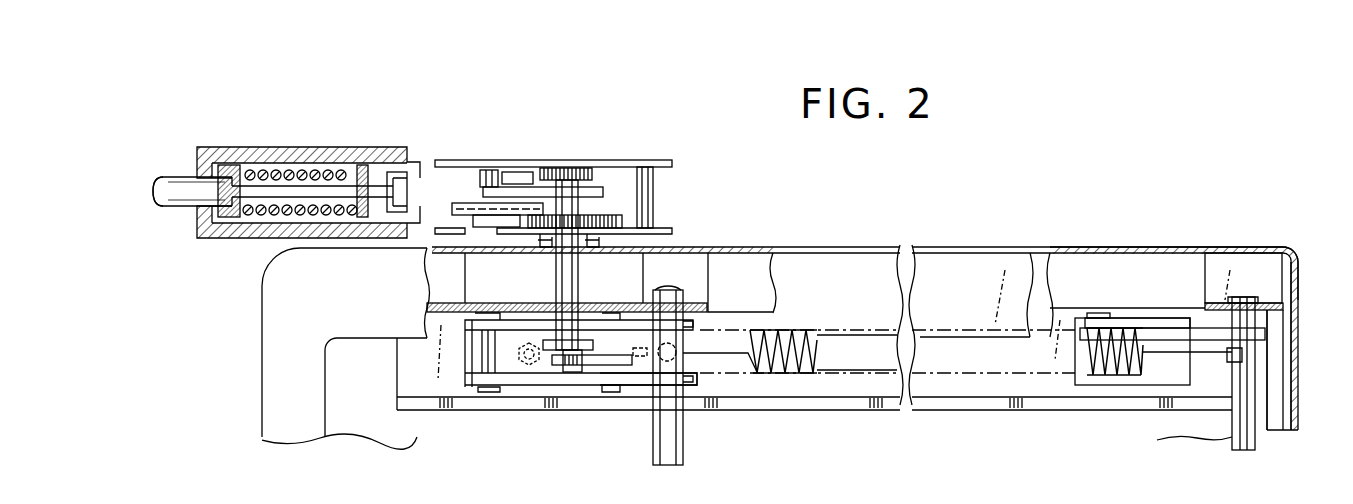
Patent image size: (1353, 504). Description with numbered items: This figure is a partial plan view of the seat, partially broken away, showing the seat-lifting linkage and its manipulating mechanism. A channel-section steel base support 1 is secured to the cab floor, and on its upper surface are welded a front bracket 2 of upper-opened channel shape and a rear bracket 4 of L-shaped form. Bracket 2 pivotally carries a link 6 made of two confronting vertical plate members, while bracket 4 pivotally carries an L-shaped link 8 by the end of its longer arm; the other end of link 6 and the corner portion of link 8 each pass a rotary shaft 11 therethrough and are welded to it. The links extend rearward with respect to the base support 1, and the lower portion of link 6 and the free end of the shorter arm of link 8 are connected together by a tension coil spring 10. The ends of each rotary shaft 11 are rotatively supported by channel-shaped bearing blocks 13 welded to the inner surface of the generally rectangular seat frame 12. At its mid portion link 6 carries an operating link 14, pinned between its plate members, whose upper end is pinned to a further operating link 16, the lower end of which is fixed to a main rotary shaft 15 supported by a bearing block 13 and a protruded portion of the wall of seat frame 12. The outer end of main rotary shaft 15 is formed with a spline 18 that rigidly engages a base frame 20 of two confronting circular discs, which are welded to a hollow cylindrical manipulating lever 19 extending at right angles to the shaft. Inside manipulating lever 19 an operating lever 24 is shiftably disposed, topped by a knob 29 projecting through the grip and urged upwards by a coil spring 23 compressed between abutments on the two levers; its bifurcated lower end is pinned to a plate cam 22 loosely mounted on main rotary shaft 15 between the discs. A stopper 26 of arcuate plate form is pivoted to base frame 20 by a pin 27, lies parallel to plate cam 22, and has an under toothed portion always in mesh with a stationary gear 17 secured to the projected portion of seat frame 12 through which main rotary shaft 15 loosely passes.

The base support 1 is at (861, 410).
The bracket 2 is at (510, 388).
The bracket 4 is at (1122, 320).
The link 6 is at (637, 377).
The link 8 is at (1155, 330).
The tension coil spring 10 is at (788, 375).
The rotary shaft 11 is at (683, 430).
The seat frame 12 is at (1185, 247).
The bearing block 13 is at (606, 302).
The operating link 14 is at (589, 367).
The main rotary shaft 15 is at (558, 274).
The operating link 16 is at (546, 352).
The stationary gear 17 is at (613, 215).
The spline 18 is at (582, 166).
The manipulating lever 19 is at (205, 240).
The base frame 20 is at (628, 160).
The plate cam 22 is at (556, 170).
The coil spring 23 is at (252, 217).
The operating lever 24 is at (300, 188).
The stopper 26 is at (458, 218).
The pin 27 is at (488, 175).
The knob 29 is at (158, 198).